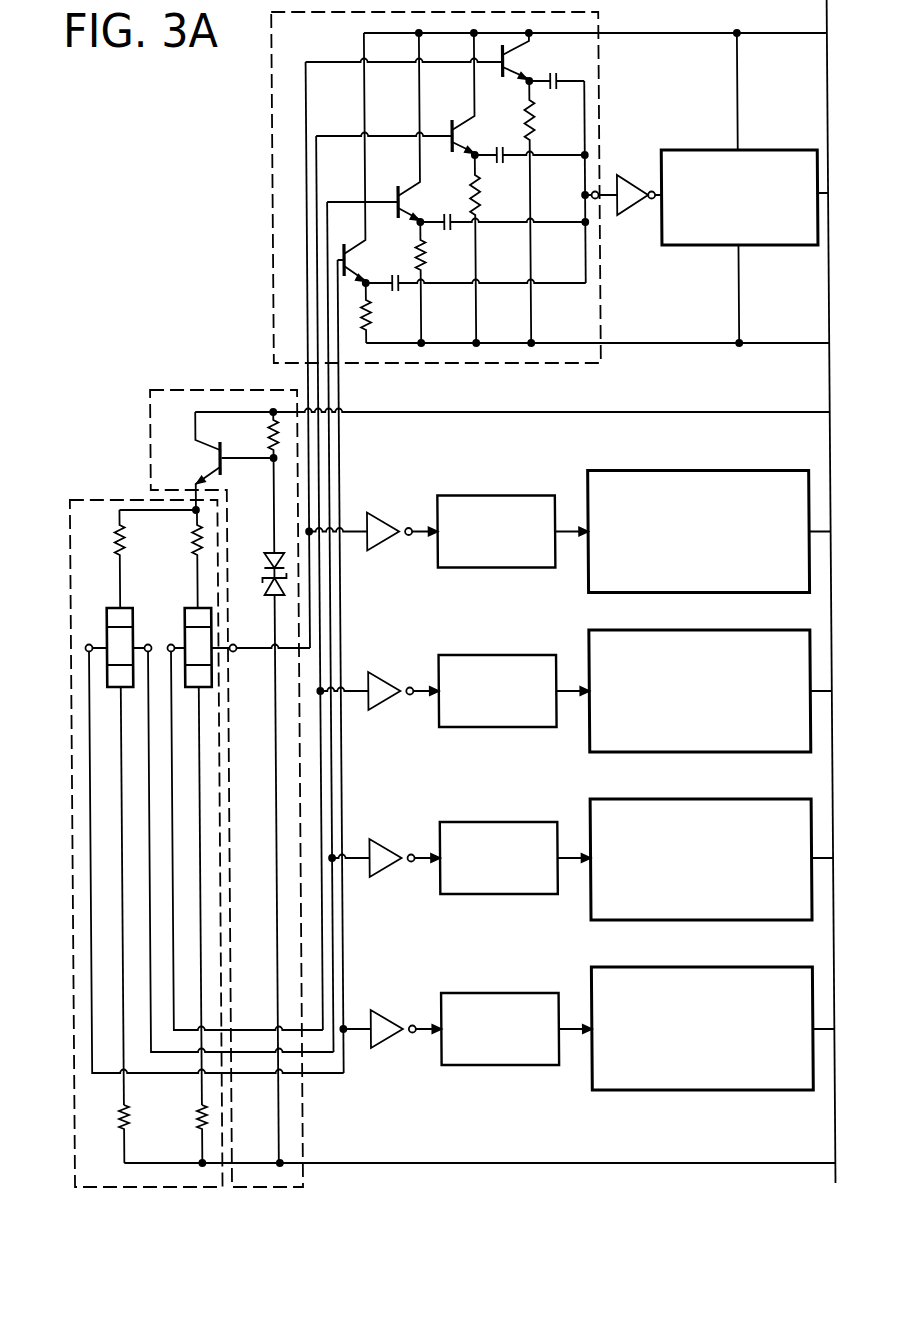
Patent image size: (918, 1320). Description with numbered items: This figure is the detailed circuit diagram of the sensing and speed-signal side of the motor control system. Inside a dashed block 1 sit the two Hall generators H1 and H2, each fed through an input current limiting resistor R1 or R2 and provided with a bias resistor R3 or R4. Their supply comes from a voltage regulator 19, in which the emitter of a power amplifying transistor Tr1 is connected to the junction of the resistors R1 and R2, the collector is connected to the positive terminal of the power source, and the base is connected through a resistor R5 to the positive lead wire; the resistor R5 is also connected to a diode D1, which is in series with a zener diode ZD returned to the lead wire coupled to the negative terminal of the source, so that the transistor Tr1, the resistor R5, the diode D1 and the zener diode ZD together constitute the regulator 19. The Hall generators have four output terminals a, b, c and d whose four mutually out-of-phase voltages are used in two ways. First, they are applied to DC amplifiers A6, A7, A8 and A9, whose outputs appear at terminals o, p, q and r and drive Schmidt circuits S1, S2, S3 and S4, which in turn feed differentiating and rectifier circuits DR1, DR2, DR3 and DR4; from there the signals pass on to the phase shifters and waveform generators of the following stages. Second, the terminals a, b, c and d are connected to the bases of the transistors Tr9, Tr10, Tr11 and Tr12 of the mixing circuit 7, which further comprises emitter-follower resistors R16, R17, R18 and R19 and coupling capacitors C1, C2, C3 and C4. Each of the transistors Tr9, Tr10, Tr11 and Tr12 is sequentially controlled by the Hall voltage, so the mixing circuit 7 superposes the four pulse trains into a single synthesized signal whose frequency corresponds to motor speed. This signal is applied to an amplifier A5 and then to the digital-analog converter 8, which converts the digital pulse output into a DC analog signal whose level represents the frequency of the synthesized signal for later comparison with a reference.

The Hall element sensing unit 1 is at (105, 500).
The mixing circuit 7 is at (271, 182).
The digital-analog converter 8 is at (697, 150).
The voltage regulator 19 is at (202, 390).
The power amplifying transistor Tr1 is at (216, 456).
The transistor of the mixing circuit Tr9 is at (356, 263).
The transistor of the mixing circuit Tr10 is at (409, 189).
The transistor of the mixing circuit Tr11 is at (466, 136).
The coupling transistor Tr12 is at (518, 62).
The input current limiting resistor R1 is at (114, 541).
The input current limiting resistor R2 is at (192, 541).
The bias resistor R3 is at (122, 1111).
The bias resistor R4 is at (196, 1112).
The resistor R5 is at (254, 482).
The emitter-follower resistor R16 is at (371, 319).
The emitter-follower resistor R17 is at (426, 256).
The emitter-follower resistor R18 is at (481, 198).
The emitter-follower resistor R19 is at (528, 112).
The coupling capacitor C1 is at (395, 289).
The coupling capacitor C2 is at (447, 228).
The coupling capacitor C3 is at (500, 159).
The coupling capacitor C4 is at (556, 90).
The diode D1 is at (264, 554).
The zener diode ZD is at (268, 597).
The Hall generator H1 is at (111, 608).
The Hall generator H2 is at (187, 608).
The amplifier A5 is at (618, 175).
The DC amplifier A6 is at (381, 516).
The DC amplifier A7 is at (381, 676).
The DC amplifier A8 is at (383, 843).
The DC amplifier A9 is at (384, 1011).
The Schmidt circuit S1 is at (482, 495).
The Schmidt circuit S2 is at (482, 655).
The Schmidt circuit S3 is at (487, 822).
The Schmidt circuit S4 is at (487, 993).
The differentiating and rectifier circuit DR1 is at (586, 476).
The differentiating and rectifier circuit DR2 is at (586, 635).
The differentiating and rectifier circuit DR3 is at (586, 804).
The differentiating and rectifier circuit DR4 is at (586, 972).
The output terminal of the Hall generators a is at (93, 637).
The output terminal of the Hall generators b is at (151, 637).
The output terminal of the Hall generators c is at (173, 637).
The output terminal of the Hall generators d is at (244, 680).
The input terminal o is at (406, 535).
The input terminal p is at (406, 694).
The input terminal q is at (406, 862).
The input terminal r is at (406, 1032).